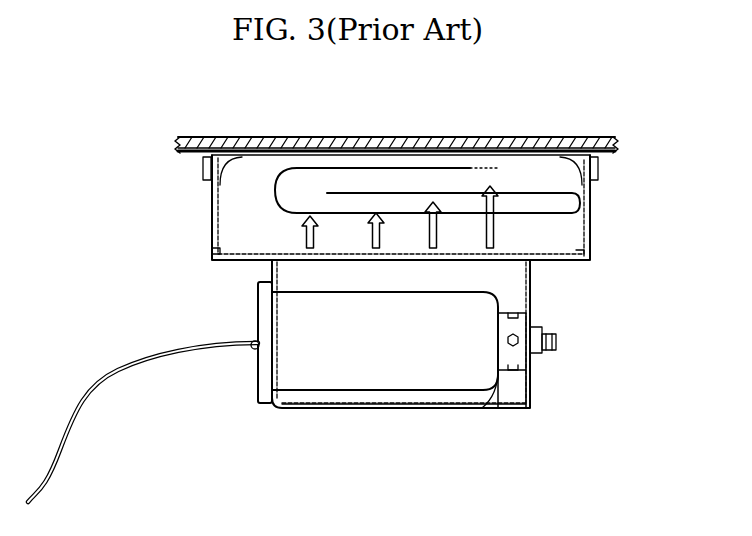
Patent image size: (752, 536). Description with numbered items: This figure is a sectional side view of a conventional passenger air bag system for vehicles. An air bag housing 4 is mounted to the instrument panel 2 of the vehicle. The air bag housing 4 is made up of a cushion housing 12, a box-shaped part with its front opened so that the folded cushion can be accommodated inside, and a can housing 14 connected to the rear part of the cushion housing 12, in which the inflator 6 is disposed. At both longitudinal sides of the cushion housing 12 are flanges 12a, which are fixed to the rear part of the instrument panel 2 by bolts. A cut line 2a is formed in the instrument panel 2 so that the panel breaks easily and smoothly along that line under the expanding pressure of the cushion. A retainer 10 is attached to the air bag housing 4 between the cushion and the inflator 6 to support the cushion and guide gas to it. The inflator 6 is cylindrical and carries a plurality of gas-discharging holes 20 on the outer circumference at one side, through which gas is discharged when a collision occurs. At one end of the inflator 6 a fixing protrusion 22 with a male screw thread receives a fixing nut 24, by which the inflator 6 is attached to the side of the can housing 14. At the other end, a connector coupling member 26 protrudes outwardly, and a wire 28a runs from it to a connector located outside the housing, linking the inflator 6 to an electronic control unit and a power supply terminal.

The instrument panel 2 is at (190, 140).
The cut line 2a is at (348, 142).
The air bag housing 4 is at (659, 250).
The inflator 6 is at (490, 408).
The retainer 10 is at (213, 250).
The cushion housing 12 is at (590, 222).
The flange 12a is at (598, 166).
The can housing 14 is at (531, 285).
The gas-discharging hole 20 is at (525, 372).
The fixing protrusion 22 is at (556, 340).
The fixing nut 24 is at (546, 327).
The connector coupling member 26 is at (252, 345).
The wire 28a is at (117, 368).